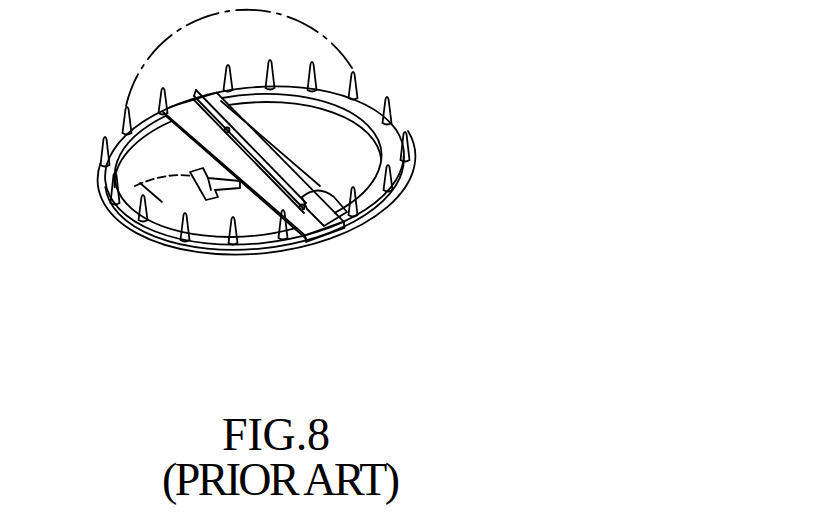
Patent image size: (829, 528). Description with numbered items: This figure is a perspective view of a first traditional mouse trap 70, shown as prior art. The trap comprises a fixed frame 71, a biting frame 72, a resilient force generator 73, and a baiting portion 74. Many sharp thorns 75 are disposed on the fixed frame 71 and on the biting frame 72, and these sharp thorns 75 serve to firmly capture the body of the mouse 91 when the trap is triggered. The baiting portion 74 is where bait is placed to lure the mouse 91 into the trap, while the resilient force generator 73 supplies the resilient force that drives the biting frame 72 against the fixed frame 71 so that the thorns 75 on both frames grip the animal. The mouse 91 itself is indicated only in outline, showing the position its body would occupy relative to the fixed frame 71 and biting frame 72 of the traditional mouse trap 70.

The first traditional mouse trap 70 is at (316, 221).
The fixed frame 71 is at (297, 235).
The biting frame 72 is at (377, 200).
The resilient force generator 73 is at (346, 212).
The baiting portion 74 is at (243, 257).
The sharp thorns 75 is at (194, 233).
The mouse 91 is at (168, 193).